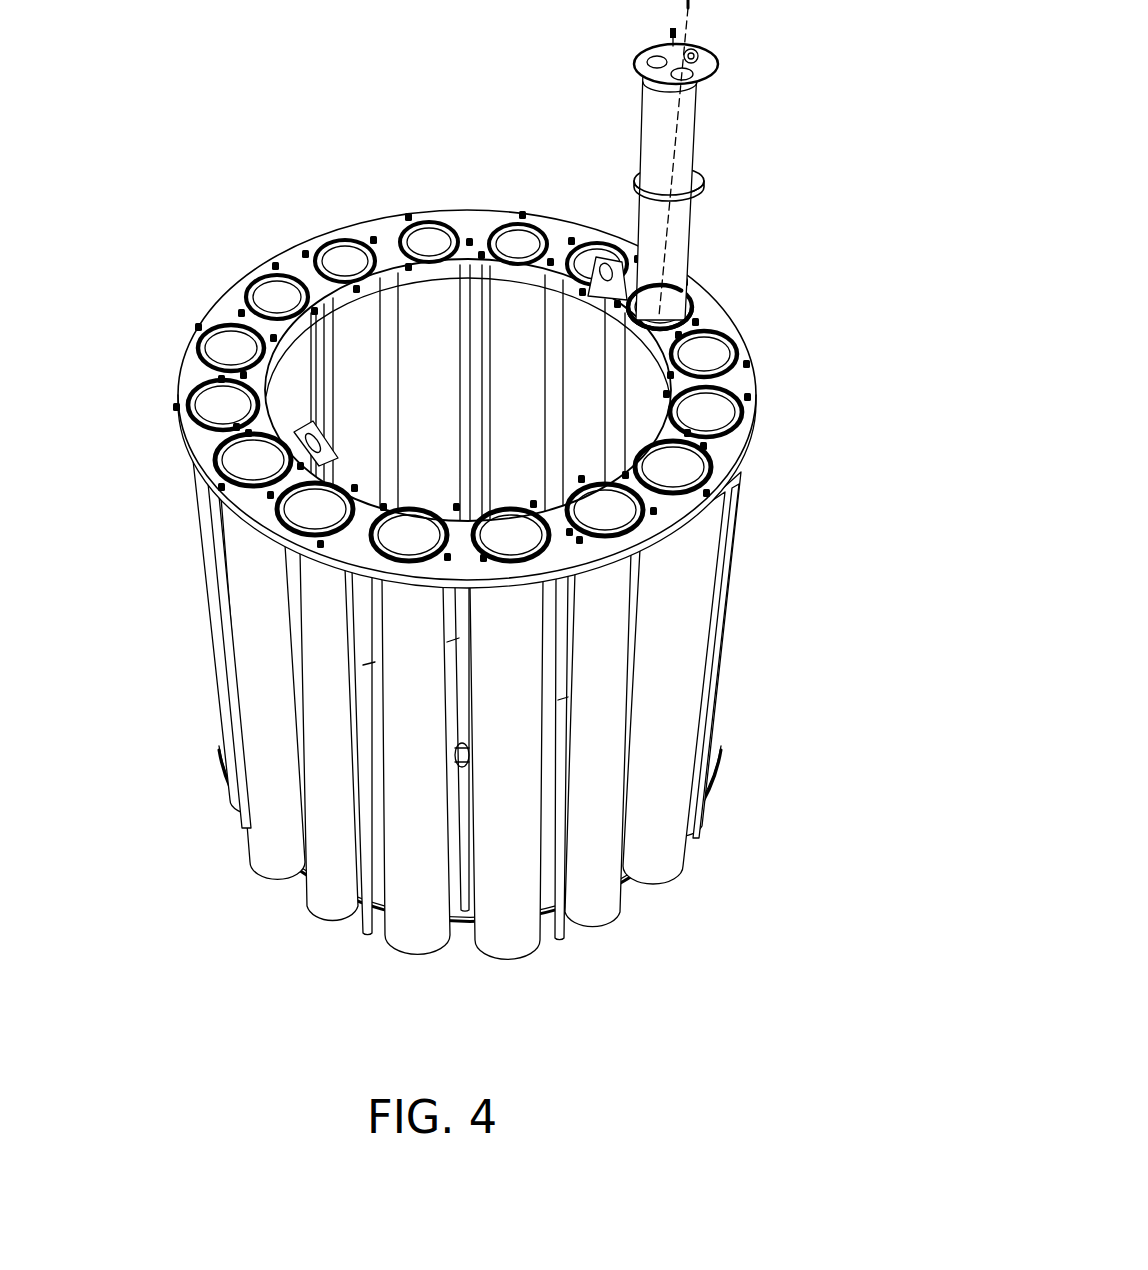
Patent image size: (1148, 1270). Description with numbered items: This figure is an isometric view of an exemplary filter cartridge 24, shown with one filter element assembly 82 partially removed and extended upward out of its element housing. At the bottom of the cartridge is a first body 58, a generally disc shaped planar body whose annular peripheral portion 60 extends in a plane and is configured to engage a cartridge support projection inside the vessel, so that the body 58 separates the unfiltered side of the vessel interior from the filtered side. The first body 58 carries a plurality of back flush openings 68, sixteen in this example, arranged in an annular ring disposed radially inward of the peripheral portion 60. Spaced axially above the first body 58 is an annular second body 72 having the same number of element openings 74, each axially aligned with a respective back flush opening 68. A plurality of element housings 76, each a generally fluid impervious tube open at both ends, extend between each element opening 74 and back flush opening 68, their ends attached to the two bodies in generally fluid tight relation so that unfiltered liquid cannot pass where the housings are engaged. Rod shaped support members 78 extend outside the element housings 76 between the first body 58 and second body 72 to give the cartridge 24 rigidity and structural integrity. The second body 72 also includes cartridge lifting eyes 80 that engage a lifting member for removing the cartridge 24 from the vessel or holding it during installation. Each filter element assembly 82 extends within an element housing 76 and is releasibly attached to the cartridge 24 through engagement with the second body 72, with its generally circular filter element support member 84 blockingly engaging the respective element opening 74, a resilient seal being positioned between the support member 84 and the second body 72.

The filter cartridge 24 is at (776, 372).
The first body 58 is at (657, 893).
The annular peripheral portion 60 is at (713, 838).
The back flush openings 68 is at (539, 973).
The second body 72 is at (737, 320).
The element openings 74 is at (432, 234).
The element housings 76 is at (676, 590).
The rod shaped support members 78 is at (478, 302).
The cartridge lifting eyes 80 is at (310, 437).
The filter element assembly 82 is at (719, 128).
The filter element support member 84 is at (717, 62).